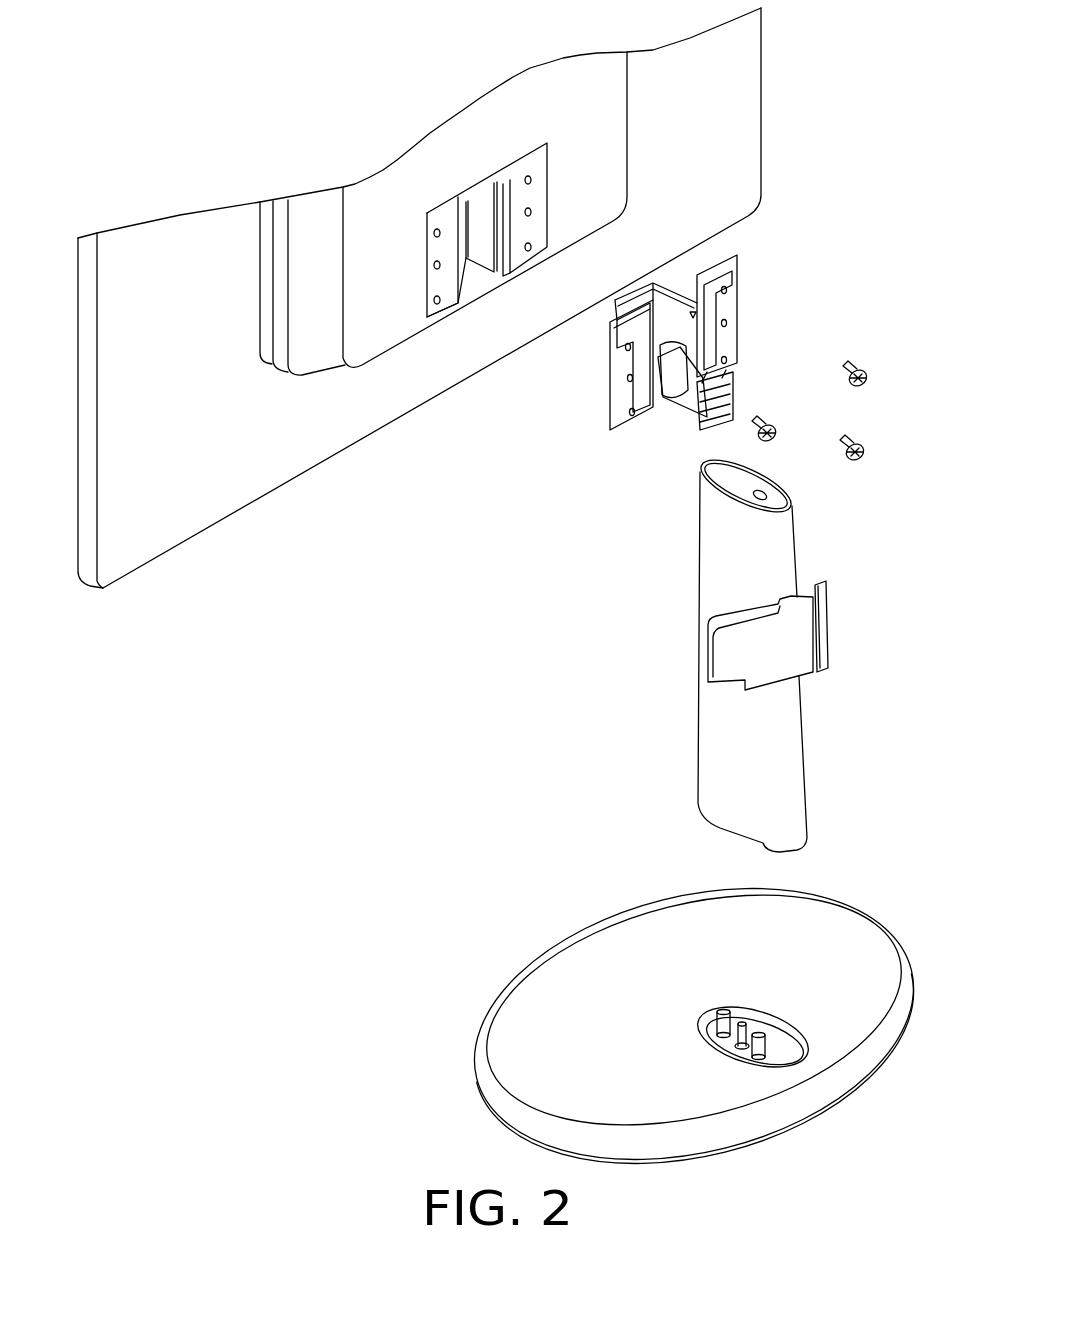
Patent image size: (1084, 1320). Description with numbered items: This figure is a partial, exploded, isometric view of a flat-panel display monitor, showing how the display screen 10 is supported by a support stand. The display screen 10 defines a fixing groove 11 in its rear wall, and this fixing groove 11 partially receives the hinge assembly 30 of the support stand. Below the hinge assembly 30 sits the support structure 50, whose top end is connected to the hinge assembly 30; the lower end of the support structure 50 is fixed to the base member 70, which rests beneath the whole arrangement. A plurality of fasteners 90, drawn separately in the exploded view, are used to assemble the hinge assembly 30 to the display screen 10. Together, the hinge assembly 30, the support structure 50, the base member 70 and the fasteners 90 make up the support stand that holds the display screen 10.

The display screen 10 is at (703, 92).
The fixing groove 11 is at (468, 265).
The hinge assembly 30 is at (733, 307).
The support structure 50 is at (777, 550).
The base member 70 is at (607, 990).
The fasteners 90 is at (853, 370).